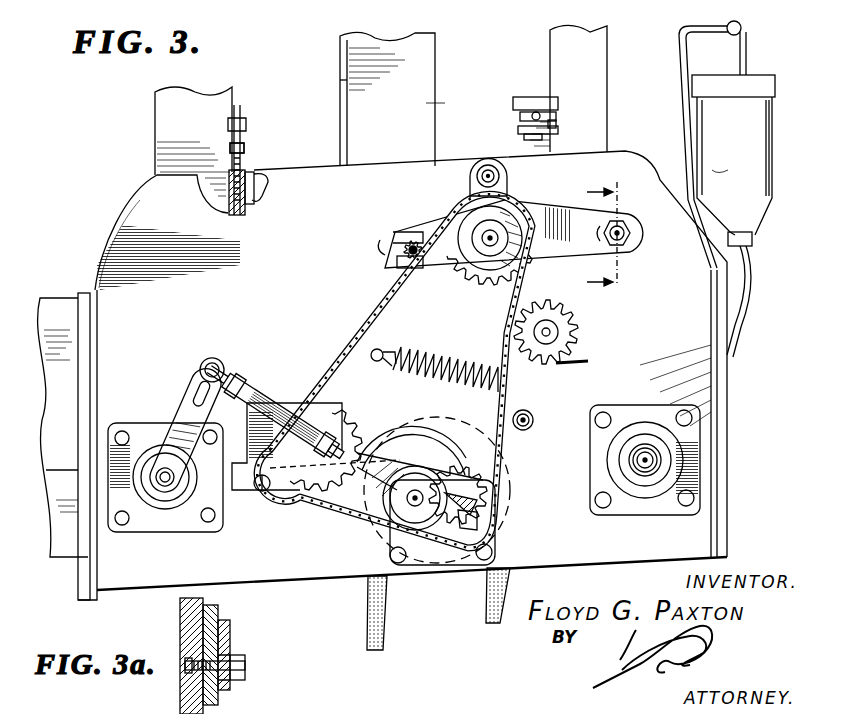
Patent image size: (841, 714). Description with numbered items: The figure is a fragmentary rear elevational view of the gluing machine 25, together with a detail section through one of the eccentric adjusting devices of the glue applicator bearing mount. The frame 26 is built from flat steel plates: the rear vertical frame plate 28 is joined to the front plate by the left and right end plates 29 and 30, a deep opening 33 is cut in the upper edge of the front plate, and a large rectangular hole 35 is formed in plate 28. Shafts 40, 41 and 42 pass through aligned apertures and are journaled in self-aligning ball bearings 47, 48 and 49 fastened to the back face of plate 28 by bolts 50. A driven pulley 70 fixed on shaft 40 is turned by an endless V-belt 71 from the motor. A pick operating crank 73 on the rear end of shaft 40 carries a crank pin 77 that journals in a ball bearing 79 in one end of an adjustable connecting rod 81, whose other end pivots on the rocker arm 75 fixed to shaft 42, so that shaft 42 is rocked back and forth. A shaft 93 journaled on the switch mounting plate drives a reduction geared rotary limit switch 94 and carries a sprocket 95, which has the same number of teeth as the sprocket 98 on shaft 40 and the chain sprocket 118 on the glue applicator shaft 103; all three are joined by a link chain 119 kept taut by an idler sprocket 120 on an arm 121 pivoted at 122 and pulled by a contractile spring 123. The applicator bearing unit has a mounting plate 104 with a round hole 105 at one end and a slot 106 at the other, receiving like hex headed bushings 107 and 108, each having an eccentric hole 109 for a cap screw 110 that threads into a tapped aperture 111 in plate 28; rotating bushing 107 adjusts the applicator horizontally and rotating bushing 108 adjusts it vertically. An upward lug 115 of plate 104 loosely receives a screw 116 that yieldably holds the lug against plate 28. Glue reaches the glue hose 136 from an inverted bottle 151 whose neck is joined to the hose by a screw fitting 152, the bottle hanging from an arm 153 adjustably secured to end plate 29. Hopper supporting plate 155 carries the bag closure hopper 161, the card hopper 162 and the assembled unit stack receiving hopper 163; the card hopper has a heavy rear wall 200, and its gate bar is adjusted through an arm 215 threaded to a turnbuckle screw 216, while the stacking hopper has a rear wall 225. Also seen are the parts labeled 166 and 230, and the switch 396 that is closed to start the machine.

In FIG. 3, the gluing machine 25 is at (108, 170).
In FIG. 3, the frame 26 is at (112, 245).
In FIG. 3, the rear vertical frame plate 28 is at (288, 166).
In FIG. 3a, the rear vertical frame plate 28 is at (180, 617).
In FIG. 3, the left end plate 29 is at (728, 396).
In FIG. 3, the right end plate 30 is at (86, 402).
In FIG. 3, the deep opening 33 is at (252, 172).
In FIG. 3, the large rectangular hole 35 is at (296, 372).
In FIG. 3, the shaft 40 is at (506, 486).
In FIG. 3, the shaft 41 is at (645, 462).
In FIG. 3, the shaft 42 is at (180, 492).
In FIG. 3, the bearing 47 is at (490, 530).
In FIG. 3, the bearing 48 is at (660, 506).
In FIG. 3, the bearing 49 is at (170, 530).
In FIG. 3, the bolts 50 is at (122, 526).
In FIG. 3, the driven pulley 70 is at (440, 577).
In FIG. 3, the endless V-belt 71 is at (386, 622).
In FIG. 3, the pick operating crank 73 is at (497, 506).
In FIG. 3, the rocker arm 75 is at (178, 412).
In FIG. 3, the crank pin 77 is at (417, 492).
In FIG. 3, the ball bearing 79 is at (410, 470).
In FIG. 3, the adjustable connecting rod 81 is at (378, 445).
In FIG. 3, the shaft 93 is at (318, 460).
In FIG. 3, the reduction geared rotary limit switch 94 is at (262, 492).
In FIG. 3, the sprocket 95 is at (333, 408).
In FIG. 3, the sprocket 98 is at (458, 468).
In FIG. 3, the glue applicator shaft 103 is at (495, 232).
In FIG. 3, the mounting plate 104 is at (440, 215).
In FIG. 3a, the mounting plate 104 is at (215, 608).
In FIG. 3, the round hole 105 is at (600, 240).
In FIG. 3a, the round hole 105 is at (230, 630).
In FIG. 3, the slot 106 is at (402, 246).
In FIG. 3, the hex headed bushing 107 is at (620, 222).
In FIG. 3a, the hex headed bushing 107 is at (245, 678).
In FIG. 3, the hex headed bushing 108 is at (422, 232).
In FIG. 3a, the eccentric hole 109 is at (232, 655).
In FIG. 3, the cap screw 110 is at (400, 258).
In FIG. 3a, the cap screw 110 is at (246, 665).
In FIG. 3a, the tapped aperture 111 is at (185, 670).
In FIG. 3, the lug 115 is at (504, 181).
In FIG. 3, the screw 116 is at (484, 166).
In FIG. 3, the chain sprocket 118 is at (448, 275).
In FIG. 3, the link chain 119 is at (390, 298).
In FIG. 3, the idler sprocket 120 is at (578, 328).
In FIG. 3, the arm 121 is at (568, 368).
In FIG. 3, the pivot 122 is at (534, 428).
In FIG. 3, the contractile spring 123 is at (458, 356).
In FIG. 3, the glue hose 136 is at (748, 300).
In FIG. 3, the bottle 151 is at (733, 133).
In FIG. 3, the screw fitting 152 is at (752, 246).
In FIG. 3, the arm 153 is at (678, 72).
In FIG. 3, the hopper supporting plate 155 is at (243, 212).
In FIG. 3, the bag closure hopper 161 is at (607, 50).
In FIG. 3, the card hopper 162 is at (216, 82).
In FIG. 3, the assembled unit stack receiving hopper 163 is at (432, 60).
In FIG. 3, the clamp 166 is at (606, 116).
In FIG. 3, the rear wall 200 is at (155, 108).
In FIG. 3, the arm 215 is at (246, 122).
In FIG. 3, the turnbuckle screw 216 is at (228, 147).
In FIG. 3, the rear wall 225 is at (445, 103).
In FIG. 3, the post edge 230 is at (338, 82).
In FIG. 3, the switch 396 is at (58, 296).